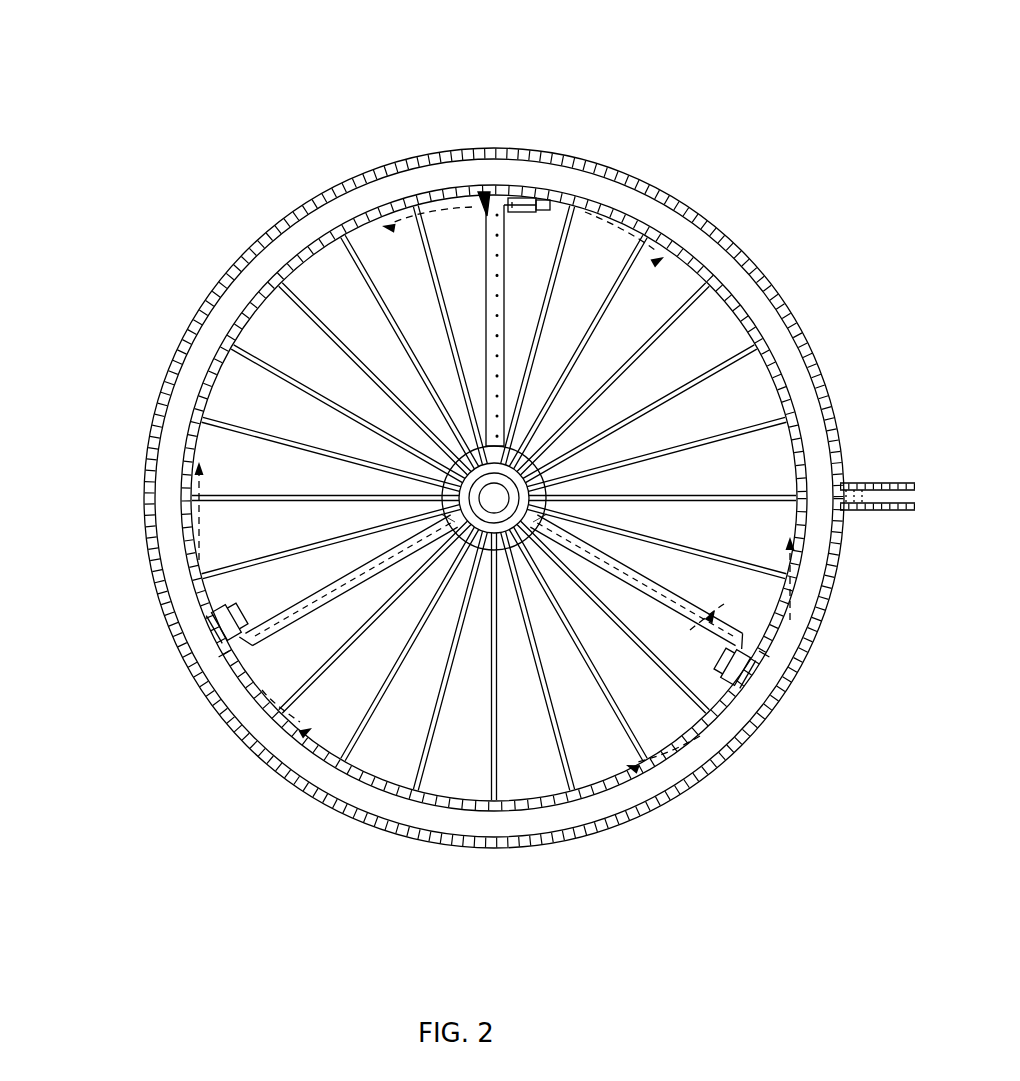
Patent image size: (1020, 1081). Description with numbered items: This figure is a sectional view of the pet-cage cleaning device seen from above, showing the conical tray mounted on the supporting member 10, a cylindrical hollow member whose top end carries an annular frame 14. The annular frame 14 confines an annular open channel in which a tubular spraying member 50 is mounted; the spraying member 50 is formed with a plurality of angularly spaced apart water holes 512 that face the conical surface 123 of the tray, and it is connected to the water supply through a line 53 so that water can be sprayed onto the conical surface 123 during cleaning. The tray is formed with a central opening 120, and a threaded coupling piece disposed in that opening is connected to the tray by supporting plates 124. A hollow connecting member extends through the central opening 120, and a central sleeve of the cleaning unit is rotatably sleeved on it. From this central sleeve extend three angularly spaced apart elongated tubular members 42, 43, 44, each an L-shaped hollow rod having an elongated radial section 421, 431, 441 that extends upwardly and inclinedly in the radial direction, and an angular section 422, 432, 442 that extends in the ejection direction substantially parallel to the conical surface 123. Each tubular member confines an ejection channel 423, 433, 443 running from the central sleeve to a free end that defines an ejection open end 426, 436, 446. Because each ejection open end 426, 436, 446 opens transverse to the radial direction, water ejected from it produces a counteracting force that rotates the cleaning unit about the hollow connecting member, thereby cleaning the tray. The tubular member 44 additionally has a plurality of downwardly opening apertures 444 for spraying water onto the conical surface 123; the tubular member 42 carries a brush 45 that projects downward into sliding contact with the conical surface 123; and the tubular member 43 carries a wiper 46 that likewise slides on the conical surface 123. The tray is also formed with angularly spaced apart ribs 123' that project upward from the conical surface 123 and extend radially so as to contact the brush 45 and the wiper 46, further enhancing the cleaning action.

The supporting member 10 is at (481, 458).
The annular frame 14 is at (148, 516).
The tubular spraying member 50 is at (274, 220).
The water holes 512 is at (180, 466).
The central opening 120 is at (790, 400).
The conical surface 123 is at (298, 340).
The ribs 123' is at (419, 715).
The supporting plates 124 is at (548, 482).
The elongated tubular member 44 is at (553, 237).
The radial section 441 is at (535, 468).
The angular section 442 is at (490, 196).
The ejection channel 443 is at (540, 200).
The apertures 444 is at (520, 196).
The ejection open end 446 is at (566, 206).
The elongated tubular member 42 is at (260, 711).
The radial section 421 is at (457, 524).
The angular section 422 is at (245, 652).
The ejection channel 423 is at (212, 624).
The ejection open end 426 is at (222, 612).
The brush 45 is at (210, 646).
The elongated tubular member 43 is at (724, 707).
The radial section 431 is at (533, 524).
The angular section 432 is at (748, 652).
The ejection channel 433 is at (727, 664).
The ejection open end 436 is at (715, 660).
The wiper 46 is at (778, 640).
The line 53 is at (880, 487).